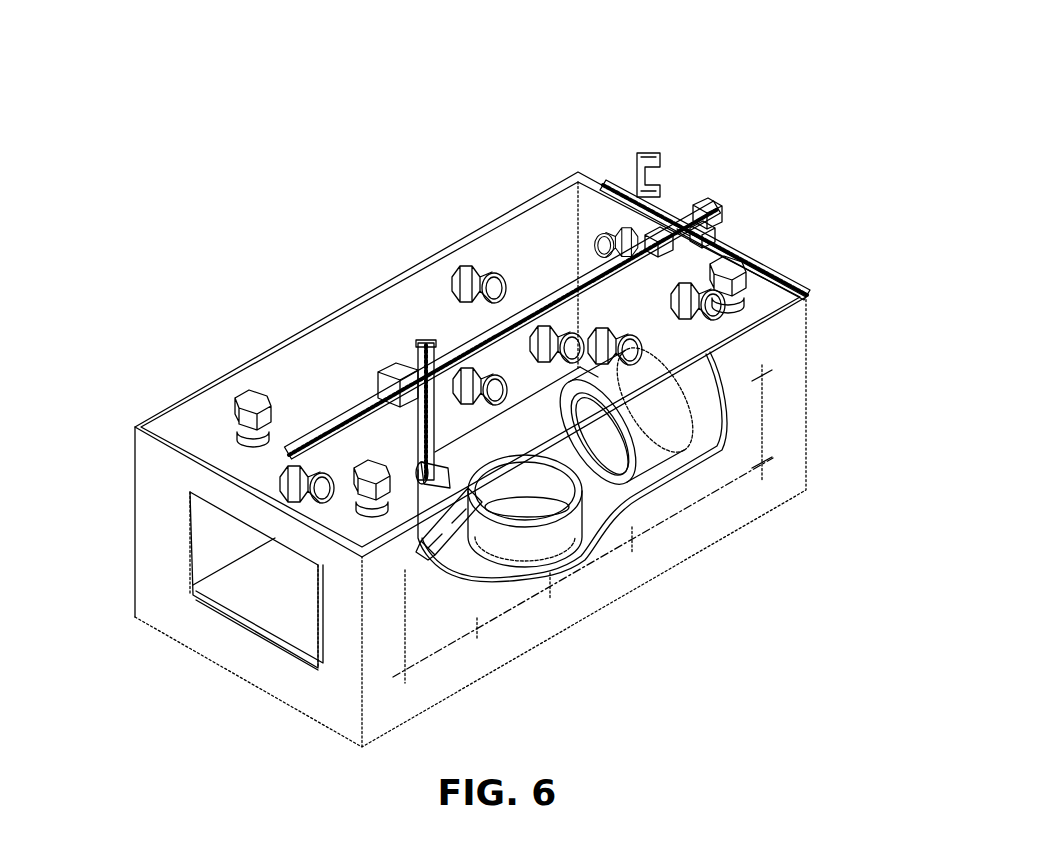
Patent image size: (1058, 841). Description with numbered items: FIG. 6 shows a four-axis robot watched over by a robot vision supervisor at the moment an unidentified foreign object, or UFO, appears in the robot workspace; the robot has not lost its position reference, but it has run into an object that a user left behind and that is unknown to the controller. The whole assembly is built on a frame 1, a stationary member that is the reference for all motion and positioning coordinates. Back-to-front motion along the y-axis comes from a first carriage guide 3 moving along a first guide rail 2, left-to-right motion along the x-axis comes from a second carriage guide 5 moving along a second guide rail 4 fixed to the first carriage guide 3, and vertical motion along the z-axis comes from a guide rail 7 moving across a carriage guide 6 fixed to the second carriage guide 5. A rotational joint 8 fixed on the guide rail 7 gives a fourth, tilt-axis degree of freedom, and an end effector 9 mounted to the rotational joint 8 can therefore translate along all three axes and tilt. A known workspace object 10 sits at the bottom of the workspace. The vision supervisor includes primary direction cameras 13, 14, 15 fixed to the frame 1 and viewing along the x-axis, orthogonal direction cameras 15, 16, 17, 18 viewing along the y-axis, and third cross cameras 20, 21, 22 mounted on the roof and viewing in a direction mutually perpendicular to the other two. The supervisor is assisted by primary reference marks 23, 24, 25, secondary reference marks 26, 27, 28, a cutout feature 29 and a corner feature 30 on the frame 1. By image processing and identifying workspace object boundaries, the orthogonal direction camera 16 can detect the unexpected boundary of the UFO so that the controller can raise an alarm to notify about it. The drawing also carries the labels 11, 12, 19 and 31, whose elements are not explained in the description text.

The housing box 1 is at (800, 460).
The transverse guide rail 2 is at (790, 280).
The slider 3 is at (717, 220).
The cross slider block 4 is at (712, 200).
The sliding block 5 is at (384, 368).
The cylindrical container 6 is at (640, 470).
The vertical column 7 is at (427, 340).
The manipulator arm 8 is at (430, 510).
The base plate 9 is at (413, 537).
The bowl container 10 is at (558, 538).
The bracket 11 is at (660, 158).
The slide block 12 is at (642, 233).
The connector 13 is at (640, 348).
The connector 14 is at (700, 312).
The connector 15 is at (614, 238).
The connector 16 is at (456, 363).
The connector 17 is at (455, 260).
The longitudinal guide rail 18 is at (380, 363).
The connector 19 is at (283, 478).
The connector 20 is at (737, 260).
The connector 21 is at (247, 397).
The opening inner wall 22 is at (270, 545).
The plate edge 23 is at (678, 517).
The support post 24 is at (765, 375).
The support post 25 is at (417, 577).
The support post 26 is at (765, 415).
The floor hidden line 27 is at (637, 548).
The support post 28 is at (413, 613).
The ledge 29 is at (275, 538).
The window opening 30 is at (190, 594).
The container bore 31 is at (660, 443).